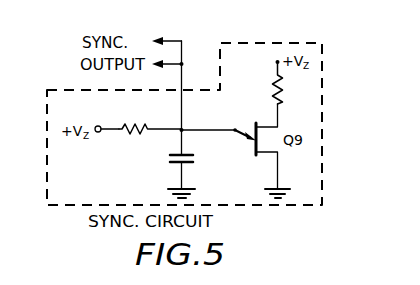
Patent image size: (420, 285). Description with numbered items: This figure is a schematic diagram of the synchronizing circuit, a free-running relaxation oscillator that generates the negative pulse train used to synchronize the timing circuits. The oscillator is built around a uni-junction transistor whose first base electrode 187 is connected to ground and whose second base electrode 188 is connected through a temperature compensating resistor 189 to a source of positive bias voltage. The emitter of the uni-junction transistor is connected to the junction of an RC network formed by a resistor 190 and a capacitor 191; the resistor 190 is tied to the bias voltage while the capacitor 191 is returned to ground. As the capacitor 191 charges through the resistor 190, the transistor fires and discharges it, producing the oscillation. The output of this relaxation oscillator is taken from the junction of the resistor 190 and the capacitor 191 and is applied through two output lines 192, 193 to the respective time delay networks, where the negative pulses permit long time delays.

The first base electrode 187 is at (268, 153).
The second base electrode 188 is at (267, 119).
The temperature compensating resistor 189 is at (275, 88).
The resistor 190 is at (138, 133).
The capacitor 191 is at (168, 162).
The line 192 is at (170, 37).
The line 193 is at (170, 65).